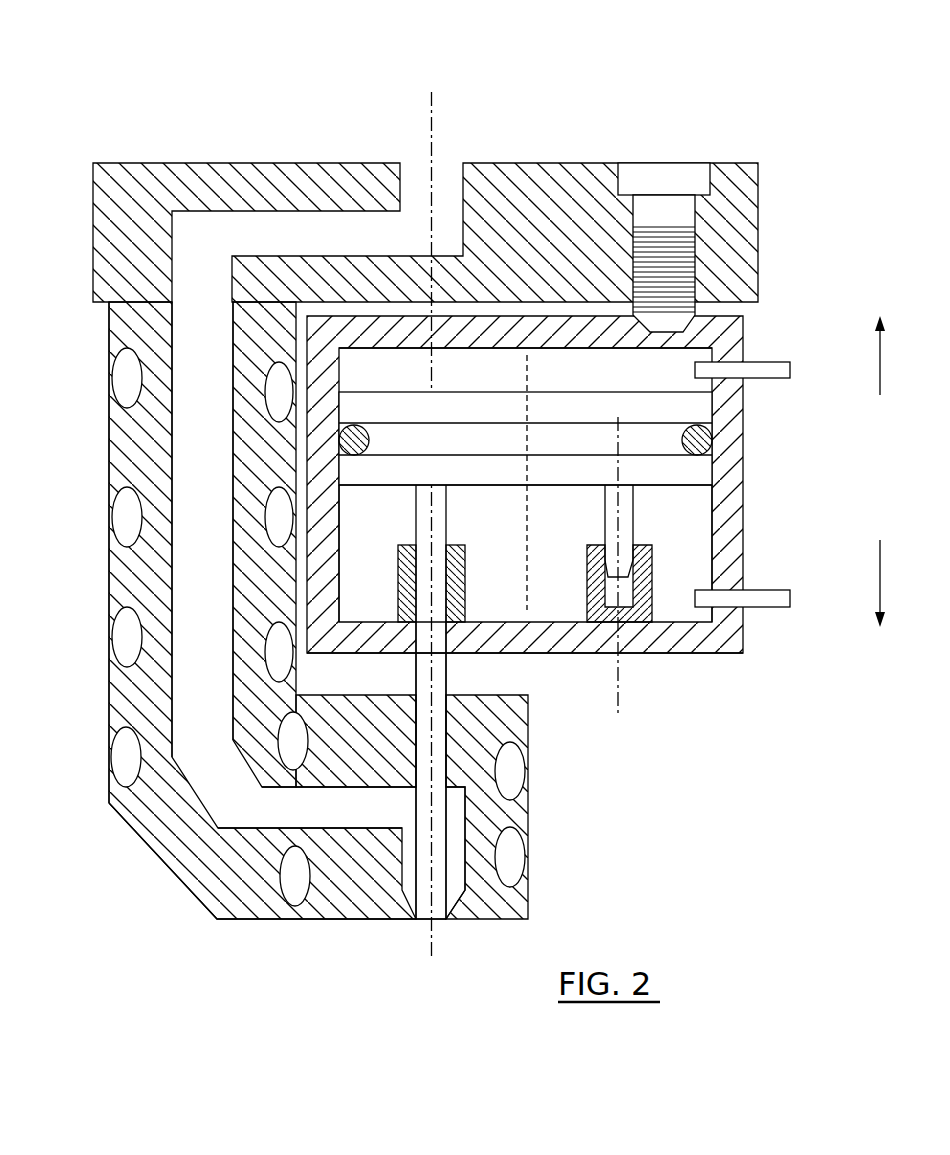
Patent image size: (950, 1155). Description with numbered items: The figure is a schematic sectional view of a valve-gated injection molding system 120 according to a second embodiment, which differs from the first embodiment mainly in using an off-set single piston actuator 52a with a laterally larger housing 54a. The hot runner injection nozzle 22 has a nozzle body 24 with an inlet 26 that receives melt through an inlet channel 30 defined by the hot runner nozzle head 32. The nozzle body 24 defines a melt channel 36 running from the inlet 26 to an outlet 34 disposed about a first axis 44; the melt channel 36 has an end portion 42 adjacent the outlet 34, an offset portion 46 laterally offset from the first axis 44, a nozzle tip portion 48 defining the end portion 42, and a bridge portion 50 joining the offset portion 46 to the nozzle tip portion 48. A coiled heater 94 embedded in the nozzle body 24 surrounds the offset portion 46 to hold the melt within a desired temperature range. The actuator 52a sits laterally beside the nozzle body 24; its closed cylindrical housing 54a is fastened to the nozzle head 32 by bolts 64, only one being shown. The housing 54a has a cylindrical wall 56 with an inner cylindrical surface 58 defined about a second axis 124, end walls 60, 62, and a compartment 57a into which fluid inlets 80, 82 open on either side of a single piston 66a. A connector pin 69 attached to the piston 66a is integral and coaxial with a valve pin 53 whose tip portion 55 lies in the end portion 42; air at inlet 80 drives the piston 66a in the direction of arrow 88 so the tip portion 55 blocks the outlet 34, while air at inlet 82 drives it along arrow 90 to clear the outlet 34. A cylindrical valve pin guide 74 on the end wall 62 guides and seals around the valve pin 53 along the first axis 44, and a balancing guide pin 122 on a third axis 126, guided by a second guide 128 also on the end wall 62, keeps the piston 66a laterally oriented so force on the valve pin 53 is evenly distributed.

The valve-gated injection molding system 120 is at (253, 53).
The hot runner injection nozzle 22 is at (66, 341).
The nozzle body 24 is at (227, 610).
The inlet 26 is at (202, 499).
The inlet channel 30 is at (246, 212).
The hot runner nozzle head 32 is at (495, 212).
The outlet 34 is at (461, 940).
The melt channel 36 is at (172, 544).
The end portion 42 is at (511, 853).
The first axis 44 is at (427, 527).
The offset portion 46 is at (77, 552).
The nozzle tip portion 48 is at (441, 807).
The bridge portion 50 is at (260, 861).
The single piston actuator 52a is at (805, 288).
The valve pin 53 is at (461, 786).
The housing 54a is at (798, 421).
The tip portion 55 is at (320, 807).
The cylindrical wall 56 is at (550, 484).
The compartment 57a is at (582, 473).
The inner cylindrical surface 58 is at (567, 553).
The end wall 60 is at (525, 363).
The end wall 62 is at (525, 669).
The bolts 64 is at (664, 227).
The piston 66a is at (525, 423).
The connector pin 69 is at (461, 702).
The valve pin guide 74 is at (455, 583).
The fluid inlet 80 is at (766, 353).
The fluid inlet 82 is at (742, 627).
The arrow 88 is at (859, 583).
The arrow 90 is at (861, 355).
The coiled heater 94 is at (185, 627).
The balancing guide pin 122 is at (586, 531).
The second axis 124 is at (556, 482).
The third axis 126 is at (657, 576).
The second guide 128 is at (641, 623).